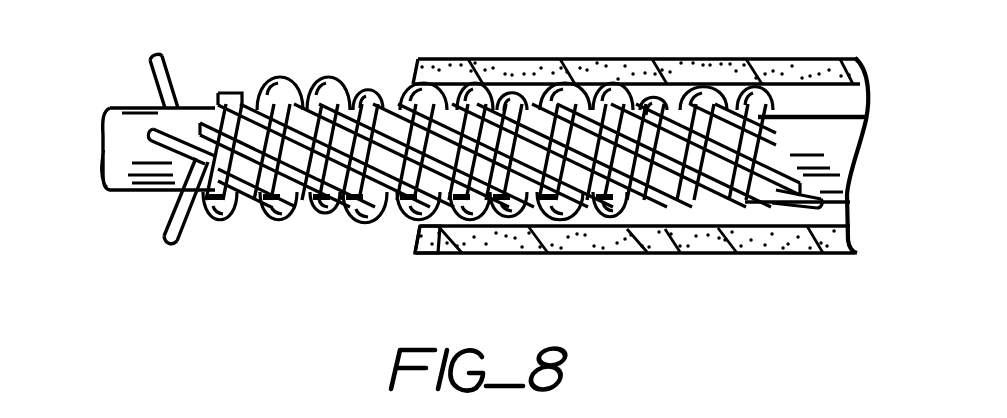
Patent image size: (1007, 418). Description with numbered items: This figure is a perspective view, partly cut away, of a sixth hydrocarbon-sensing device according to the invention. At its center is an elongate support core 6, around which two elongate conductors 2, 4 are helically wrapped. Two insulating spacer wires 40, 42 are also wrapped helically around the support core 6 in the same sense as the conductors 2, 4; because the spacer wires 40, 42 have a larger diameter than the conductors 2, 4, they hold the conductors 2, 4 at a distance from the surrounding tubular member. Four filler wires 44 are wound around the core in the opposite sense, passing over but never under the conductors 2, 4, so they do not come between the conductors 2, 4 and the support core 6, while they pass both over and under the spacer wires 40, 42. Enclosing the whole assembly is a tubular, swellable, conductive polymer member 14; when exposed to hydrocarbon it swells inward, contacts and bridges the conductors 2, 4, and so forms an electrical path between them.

The elongate conductor 2 is at (243, 77).
The elongate conductor 4 is at (177, 72).
The central elongate support core 6 is at (148, 172).
The tubular swellable conductive polymer member 14 is at (785, 243).
The insulating spacer wire 40 is at (364, 222).
The insulating spacer wire 42 is at (437, 228).
The filler wire 44 is at (701, 255).